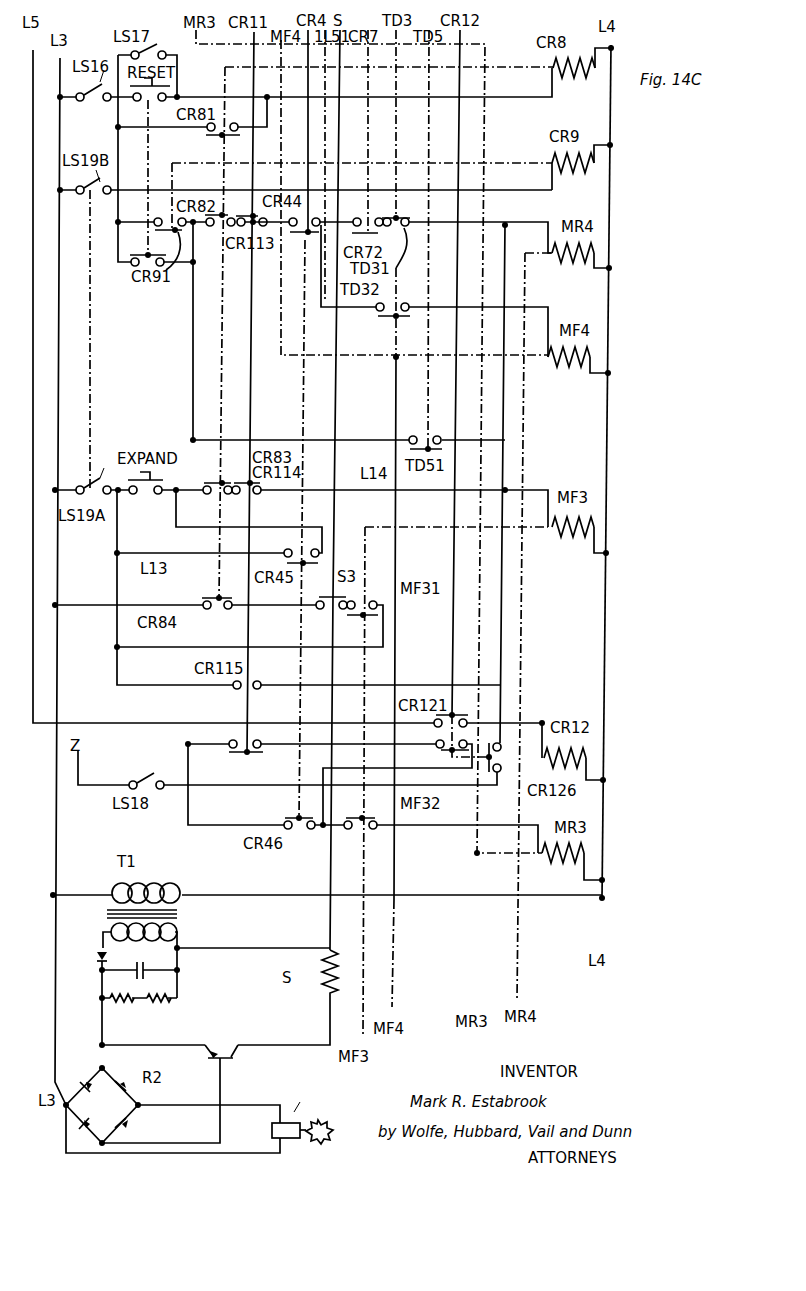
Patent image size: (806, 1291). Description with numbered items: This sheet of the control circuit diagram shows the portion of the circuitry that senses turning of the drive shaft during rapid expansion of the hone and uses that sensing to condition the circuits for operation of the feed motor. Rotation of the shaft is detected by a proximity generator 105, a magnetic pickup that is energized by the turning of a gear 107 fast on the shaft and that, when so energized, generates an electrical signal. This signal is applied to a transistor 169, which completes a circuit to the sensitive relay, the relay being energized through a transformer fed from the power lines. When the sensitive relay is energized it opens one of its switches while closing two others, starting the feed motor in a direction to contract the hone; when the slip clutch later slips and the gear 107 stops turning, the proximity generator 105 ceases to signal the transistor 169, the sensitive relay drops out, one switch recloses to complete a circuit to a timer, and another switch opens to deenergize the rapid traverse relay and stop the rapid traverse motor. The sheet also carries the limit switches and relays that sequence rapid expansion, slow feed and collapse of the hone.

The transistor 169 is at (222, 1052).
The proximity generator 105 is at (280, 1121).
The gear 107 is at (320, 1118).